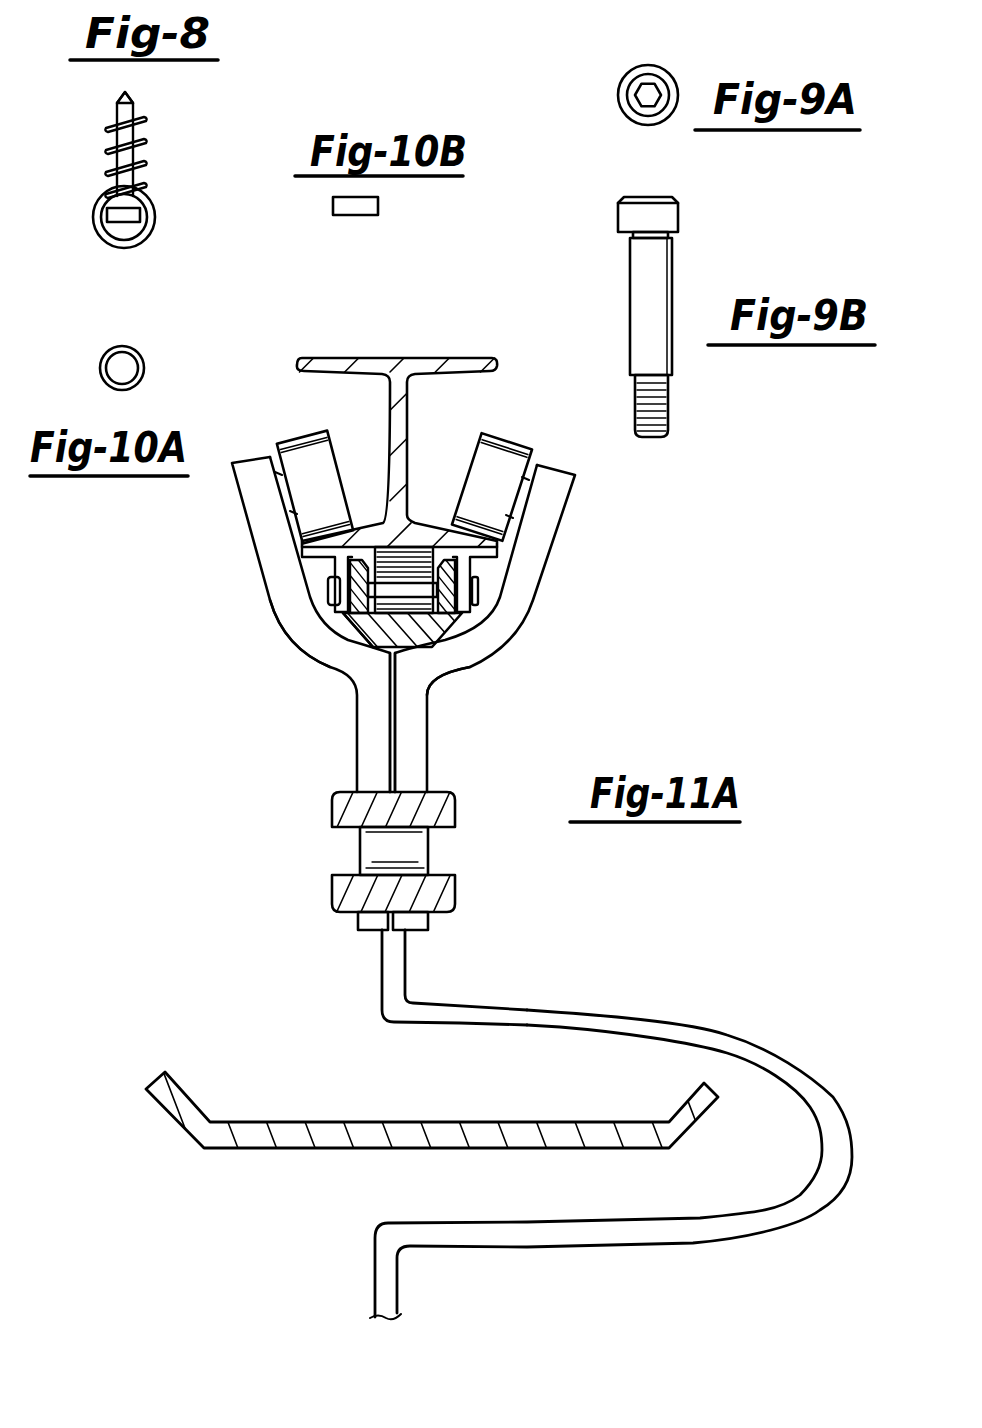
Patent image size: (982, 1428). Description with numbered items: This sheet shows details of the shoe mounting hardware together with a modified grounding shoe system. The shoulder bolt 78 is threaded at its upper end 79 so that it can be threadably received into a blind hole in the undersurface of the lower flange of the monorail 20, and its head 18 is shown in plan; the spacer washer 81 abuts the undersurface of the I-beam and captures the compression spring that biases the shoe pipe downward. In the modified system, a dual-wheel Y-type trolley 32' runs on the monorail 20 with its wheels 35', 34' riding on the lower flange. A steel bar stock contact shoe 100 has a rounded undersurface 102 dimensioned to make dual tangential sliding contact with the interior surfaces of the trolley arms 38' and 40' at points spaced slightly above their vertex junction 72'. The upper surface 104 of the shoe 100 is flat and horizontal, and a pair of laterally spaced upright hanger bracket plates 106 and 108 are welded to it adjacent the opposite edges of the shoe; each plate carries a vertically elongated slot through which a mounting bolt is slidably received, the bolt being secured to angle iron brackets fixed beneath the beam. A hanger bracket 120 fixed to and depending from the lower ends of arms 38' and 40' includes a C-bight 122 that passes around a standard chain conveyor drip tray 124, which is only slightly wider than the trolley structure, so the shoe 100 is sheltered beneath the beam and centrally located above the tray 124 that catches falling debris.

In FIG. 8, the shoulder bolt 78 is at (117, 143).
In FIG. 9B, the shoulder bolt 78 is at (672, 267).
In FIG. 8, the threaded upper end 79 is at (118, 112).
In FIG. 9B, the threaded upper end 79 is at (672, 413).
In FIG. 9A, the socket head of bolt 18 is at (653, 126).
In FIG. 10B, the spacer washer 81 is at (367, 215).
In FIG. 10A, the spacer washer 81 is at (135, 349).
In FIG. 11A, the monorail 20 is at (503, 361).
In FIG. 11A, the left brake block 35' is at (315, 464).
In FIG. 11A, the right brake block 34' is at (515, 468).
In FIG. 11A, the dual-wheel Y-type trolley 32' is at (281, 624).
In FIG. 11A, the trolley arm 38' is at (509, 628).
In FIG. 11A, the trolley arm 40' is at (261, 627).
In FIG. 11A, the vertex junction 72' is at (467, 694).
In FIG. 11A, the contact shoe 100 is at (374, 663).
In FIG. 11A, the rounded undersurface 102 is at (456, 626).
In FIG. 11A, the upper surface 104 is at (355, 623).
In FIG. 11A, the hanger bracket plate 106 is at (444, 559).
In FIG. 11A, the hanger bracket plate 108 is at (358, 559).
In FIG. 11A, the hanger bracket 120 is at (416, 979).
In FIG. 11A, the C-bight 122 is at (661, 1019).
In FIG. 11A, the drip tray 124 is at (178, 1131).